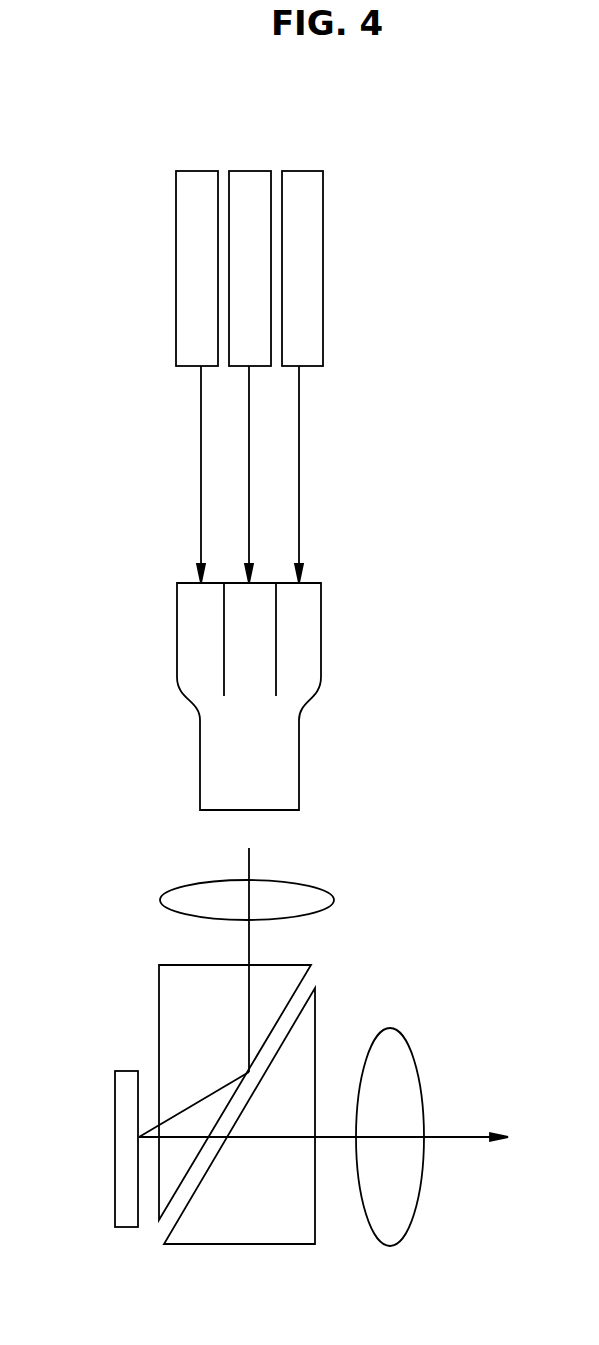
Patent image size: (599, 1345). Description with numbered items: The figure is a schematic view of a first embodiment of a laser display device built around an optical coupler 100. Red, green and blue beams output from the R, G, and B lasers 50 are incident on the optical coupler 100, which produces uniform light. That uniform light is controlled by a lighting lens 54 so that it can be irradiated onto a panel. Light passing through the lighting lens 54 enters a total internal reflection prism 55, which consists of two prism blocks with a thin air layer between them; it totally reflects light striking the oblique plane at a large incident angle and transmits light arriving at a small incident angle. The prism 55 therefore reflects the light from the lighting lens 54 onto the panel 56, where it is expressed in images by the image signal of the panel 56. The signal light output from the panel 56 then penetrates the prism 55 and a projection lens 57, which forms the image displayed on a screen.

The R, G, and B lasers 50 is at (203, 238).
The optical coupler 100 is at (345, 673).
The lighting lens 54 is at (185, 890).
The total internal reflection (TIR) prism 55 is at (243, 1230).
The panel 56 is at (125, 1168).
The projection lens 57 is at (408, 1193).